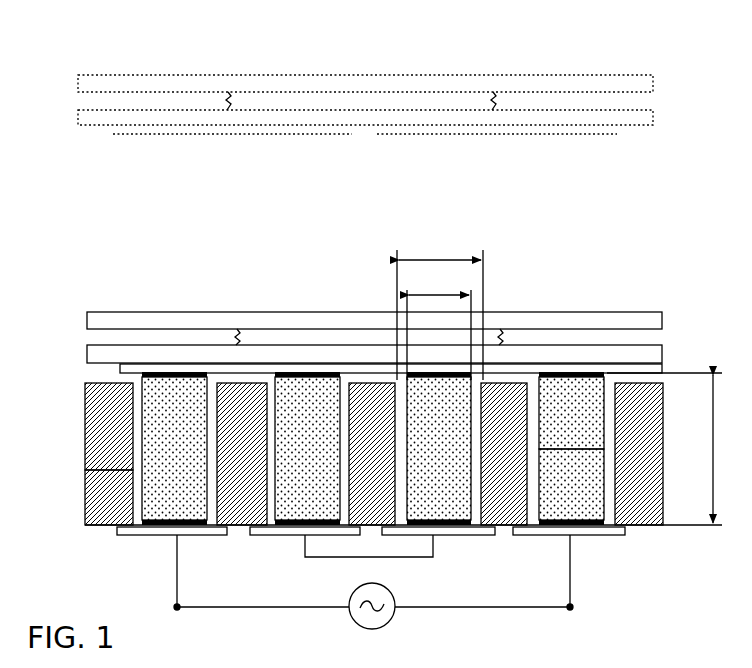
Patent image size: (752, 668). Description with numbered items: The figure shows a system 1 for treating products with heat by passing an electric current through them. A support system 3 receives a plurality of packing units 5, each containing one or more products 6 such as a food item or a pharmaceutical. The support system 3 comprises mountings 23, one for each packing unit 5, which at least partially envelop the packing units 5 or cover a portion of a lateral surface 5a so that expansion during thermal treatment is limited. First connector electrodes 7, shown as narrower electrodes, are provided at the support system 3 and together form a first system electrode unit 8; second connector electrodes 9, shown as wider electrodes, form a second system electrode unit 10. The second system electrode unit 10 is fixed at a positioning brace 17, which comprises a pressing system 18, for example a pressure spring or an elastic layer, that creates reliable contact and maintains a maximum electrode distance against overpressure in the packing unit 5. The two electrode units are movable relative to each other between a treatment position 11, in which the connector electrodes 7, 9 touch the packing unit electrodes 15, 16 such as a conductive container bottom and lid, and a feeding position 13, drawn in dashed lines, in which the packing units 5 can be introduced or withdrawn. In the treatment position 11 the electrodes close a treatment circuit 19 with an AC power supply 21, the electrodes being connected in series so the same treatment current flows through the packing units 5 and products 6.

The system 1 is at (658, 226).
The support system 3 is at (650, 455).
The packing unit 5 is at (603, 490).
The lateral surface 5a is at (135, 470).
The product 6 is at (585, 420).
The first connector electrode 7 is at (600, 535).
The first system electrode unit 8 is at (100, 533).
The second connector electrode 9 is at (612, 372).
The second system electrode unit 10 is at (80, 372).
The treatment position 11 is at (80, 297).
The feeding position 13 is at (88, 135).
The packing unit electrode 15 is at (143, 535).
The packing unit electrode 16 is at (170, 373).
The positioning brace 17 is at (668, 318).
The pressing system 18 is at (239, 344).
The treatment circuit 19 is at (318, 558).
The AC power supply 21 is at (387, 624).
The mounting 23 is at (108, 416).